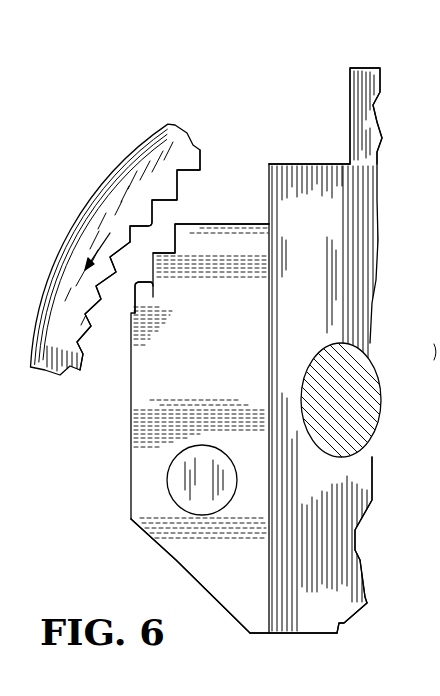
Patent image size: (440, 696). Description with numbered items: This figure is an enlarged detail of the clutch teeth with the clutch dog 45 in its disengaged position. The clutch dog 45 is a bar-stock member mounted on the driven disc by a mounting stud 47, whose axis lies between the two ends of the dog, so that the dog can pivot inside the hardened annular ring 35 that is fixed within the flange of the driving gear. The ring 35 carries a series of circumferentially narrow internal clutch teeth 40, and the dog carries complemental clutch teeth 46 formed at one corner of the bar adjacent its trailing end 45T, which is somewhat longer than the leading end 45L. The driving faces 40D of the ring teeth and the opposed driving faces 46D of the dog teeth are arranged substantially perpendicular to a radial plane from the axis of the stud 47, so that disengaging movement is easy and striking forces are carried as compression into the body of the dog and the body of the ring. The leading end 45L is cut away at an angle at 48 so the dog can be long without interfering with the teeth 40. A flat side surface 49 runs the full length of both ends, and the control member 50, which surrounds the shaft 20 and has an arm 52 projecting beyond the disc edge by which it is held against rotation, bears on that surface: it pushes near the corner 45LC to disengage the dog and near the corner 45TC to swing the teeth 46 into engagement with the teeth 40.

The shaft 20 is at (337, 457).
The hardened annular ring 35 is at (120, 183).
The internal clutch teeth 40 is at (90, 333).
The driving faces of the teeth 40D is at (157, 227).
The clutch dog 45 is at (230, 350).
The trailing end of the clutch dog 45T is at (238, 222).
The corner at the trailing end 45TC is at (266, 228).
The leading end of the clutch dog 45L is at (243, 598).
The corner at the leading end 45LC is at (275, 631).
The clutch teeth 46 is at (153, 286).
The driving faces of the clutch teeth 46D is at (172, 250).
The mounting stud 47 is at (175, 485).
The angled cut-away 48 is at (163, 547).
The flat side surface 49 is at (266, 328).
The control member 50 is at (328, 543).
The arm 52 is at (350, 99).